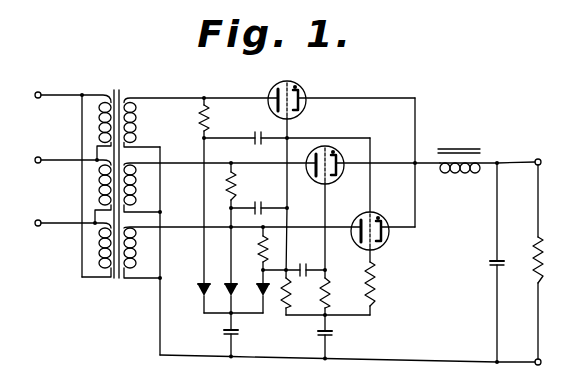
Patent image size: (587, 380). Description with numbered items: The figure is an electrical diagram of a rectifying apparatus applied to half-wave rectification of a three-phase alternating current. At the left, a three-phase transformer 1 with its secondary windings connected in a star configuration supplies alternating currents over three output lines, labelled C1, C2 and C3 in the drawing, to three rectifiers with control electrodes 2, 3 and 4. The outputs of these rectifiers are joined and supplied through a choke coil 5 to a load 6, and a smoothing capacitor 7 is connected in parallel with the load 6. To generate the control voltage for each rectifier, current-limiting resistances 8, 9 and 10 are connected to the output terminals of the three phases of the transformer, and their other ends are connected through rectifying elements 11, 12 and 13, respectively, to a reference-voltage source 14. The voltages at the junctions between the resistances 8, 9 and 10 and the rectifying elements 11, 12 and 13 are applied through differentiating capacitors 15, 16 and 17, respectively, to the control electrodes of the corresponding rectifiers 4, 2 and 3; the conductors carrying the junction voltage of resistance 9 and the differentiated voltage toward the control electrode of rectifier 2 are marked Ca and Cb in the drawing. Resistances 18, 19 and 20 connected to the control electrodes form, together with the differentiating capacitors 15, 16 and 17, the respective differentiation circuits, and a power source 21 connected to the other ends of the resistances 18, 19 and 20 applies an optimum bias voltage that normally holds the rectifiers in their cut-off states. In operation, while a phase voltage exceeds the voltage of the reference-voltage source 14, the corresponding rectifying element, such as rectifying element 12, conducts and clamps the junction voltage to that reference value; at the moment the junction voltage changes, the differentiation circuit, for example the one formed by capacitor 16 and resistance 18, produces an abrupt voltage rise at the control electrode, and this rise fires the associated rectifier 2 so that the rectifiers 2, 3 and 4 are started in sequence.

The three-phase transformer 1 is at (117, 93).
The rectifier with control electrode 2 is at (295, 104).
The rectifier with control electrode 3 is at (329, 174).
The rectifier with control electrode 4 is at (386, 246).
The choke coil 5 is at (467, 147).
The load 6 is at (548, 260).
The smoothing capacitor 7 is at (489, 260).
The resistance 8 is at (198, 118).
The resistance 9 is at (224, 186).
The resistance 10 is at (252, 249).
The rectifying element 11 is at (195, 290).
The rectifying element 12 is at (227, 287).
The rectifying element 13 is at (258, 289).
The reference-voltage source 14 is at (215, 333).
The differentiating capacitor 15 is at (257, 133).
The differentiating capacitor 16 is at (260, 194).
The differentiating capacitor 17 is at (302, 259).
The resistance 18 is at (297, 293).
The resistance 19 is at (336, 286).
The resistance 20 is at (384, 284).
The power source 21 is at (337, 337).
The secondary circuit C1 is at (201, 85).
The secondary circuit C2 is at (220, 153).
The secondary circuit C3 is at (242, 215).
The conductor Ca is at (219, 194).
The conductor Cb is at (302, 182).